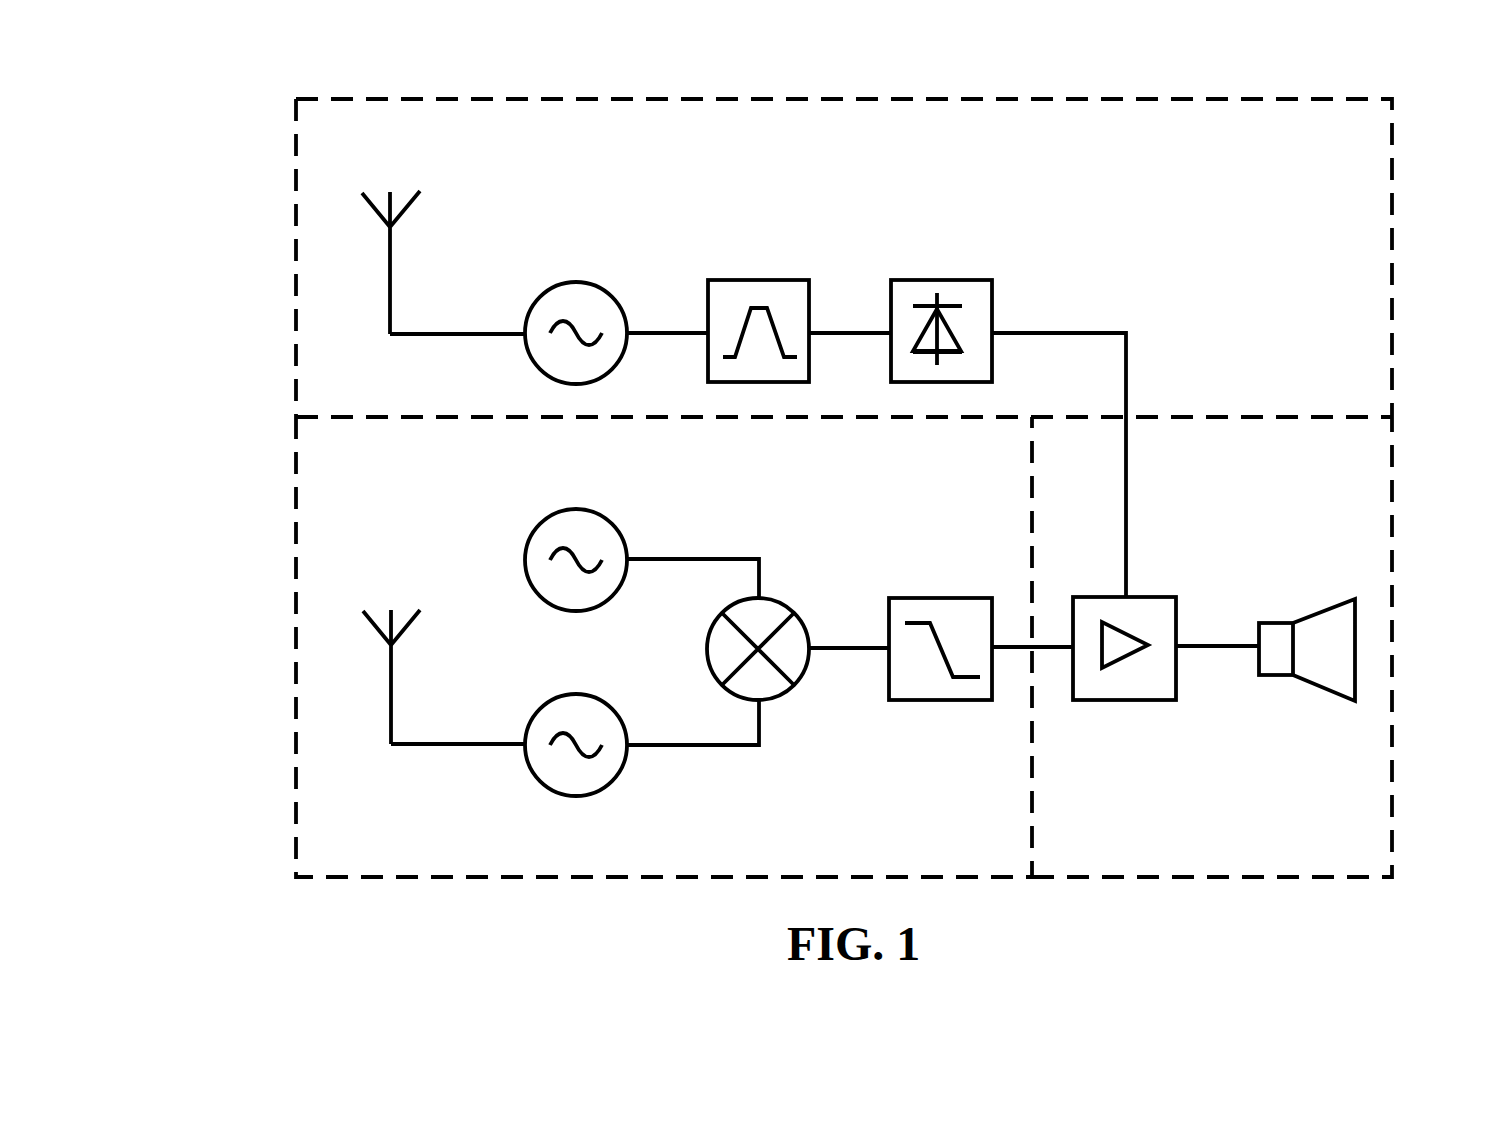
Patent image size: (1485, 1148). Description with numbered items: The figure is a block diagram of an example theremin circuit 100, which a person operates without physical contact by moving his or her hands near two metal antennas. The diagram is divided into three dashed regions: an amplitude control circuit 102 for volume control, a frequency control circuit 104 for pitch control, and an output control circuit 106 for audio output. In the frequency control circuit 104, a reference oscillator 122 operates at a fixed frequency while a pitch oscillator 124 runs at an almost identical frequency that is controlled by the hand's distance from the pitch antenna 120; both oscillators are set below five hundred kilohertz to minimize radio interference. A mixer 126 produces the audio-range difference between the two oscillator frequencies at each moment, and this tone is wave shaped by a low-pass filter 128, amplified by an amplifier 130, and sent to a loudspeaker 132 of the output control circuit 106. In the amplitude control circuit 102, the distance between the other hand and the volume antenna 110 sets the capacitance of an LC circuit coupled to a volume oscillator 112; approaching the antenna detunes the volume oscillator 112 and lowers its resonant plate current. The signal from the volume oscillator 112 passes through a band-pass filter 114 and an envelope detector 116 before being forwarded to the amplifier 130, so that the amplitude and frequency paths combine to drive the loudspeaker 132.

The theremin circuit 100 is at (160, 100).
The amplitude control circuit 102 is at (1263, 99).
The frequency control circuit 104 is at (297, 537).
The output control circuit 106 is at (1393, 510).
The volume antenna 110 is at (390, 290).
The volume oscillator 112 is at (610, 293).
The band-pass filter 114 is at (790, 280).
The envelope detector 116 is at (987, 280).
The pitch antenna 120 is at (391, 690).
The reference oscillator 122 is at (617, 523).
The pitch oscillator 124 is at (603, 700).
The mixer 126 is at (778, 598).
The low-pass filter 128 is at (942, 598).
The amplifier 130 is at (1148, 597).
The loudspeaker 132 is at (1323, 608).